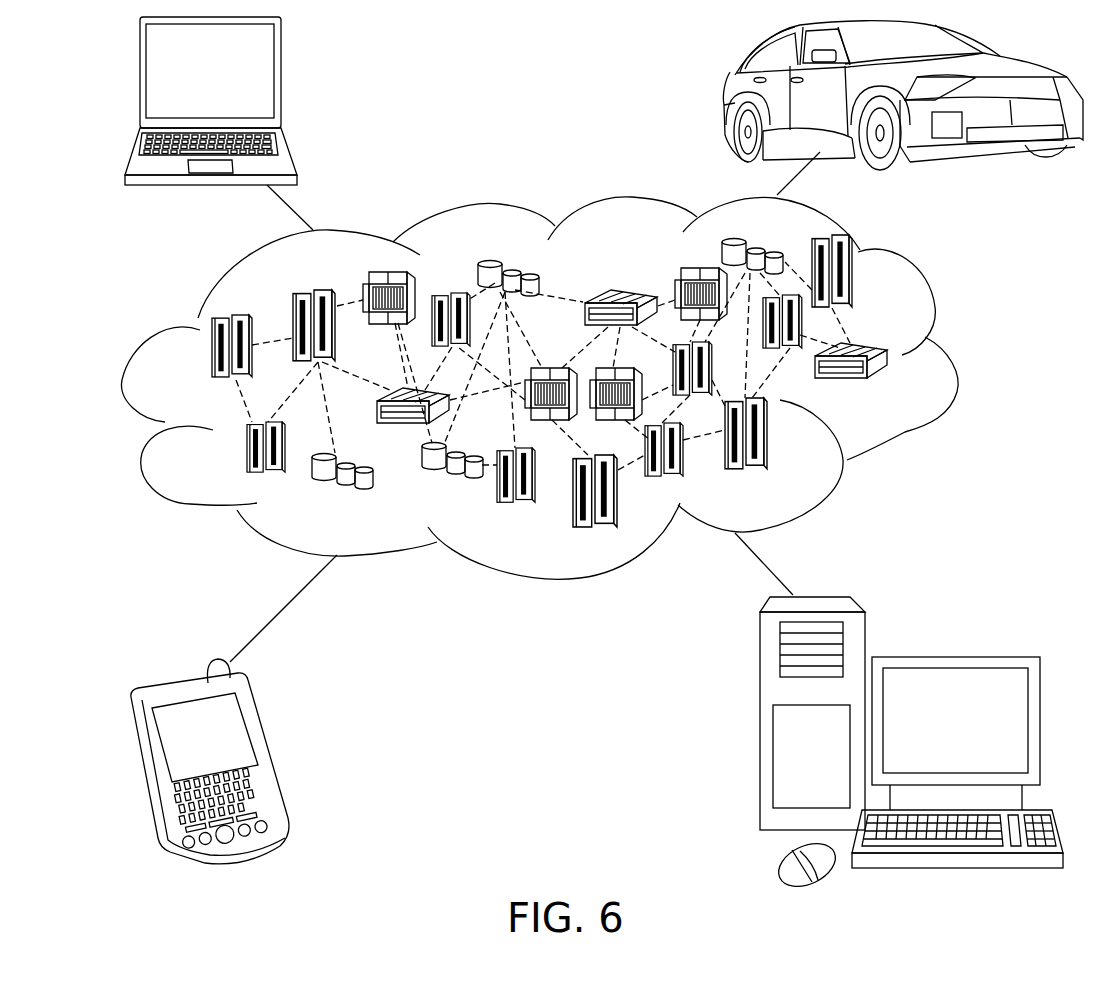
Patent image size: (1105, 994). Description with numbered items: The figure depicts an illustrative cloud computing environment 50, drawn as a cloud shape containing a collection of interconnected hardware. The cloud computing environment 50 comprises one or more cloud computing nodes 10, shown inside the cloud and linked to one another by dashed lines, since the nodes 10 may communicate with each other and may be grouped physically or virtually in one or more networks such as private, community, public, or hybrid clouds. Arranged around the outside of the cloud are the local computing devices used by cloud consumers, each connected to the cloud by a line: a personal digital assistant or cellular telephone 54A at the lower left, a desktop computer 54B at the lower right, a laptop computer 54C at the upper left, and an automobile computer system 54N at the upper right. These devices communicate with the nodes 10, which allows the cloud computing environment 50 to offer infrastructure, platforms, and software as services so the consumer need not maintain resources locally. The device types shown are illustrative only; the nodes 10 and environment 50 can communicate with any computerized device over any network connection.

The cloud computing node 10 is at (900, 393).
The cloud computing environment 50 is at (953, 358).
The personal digital assistant or cellular telephone 54A is at (272, 752).
The desktop computer 54B is at (952, 653).
The laptop computer 54C is at (281, 80).
The automobile computer system 54N is at (730, 98).